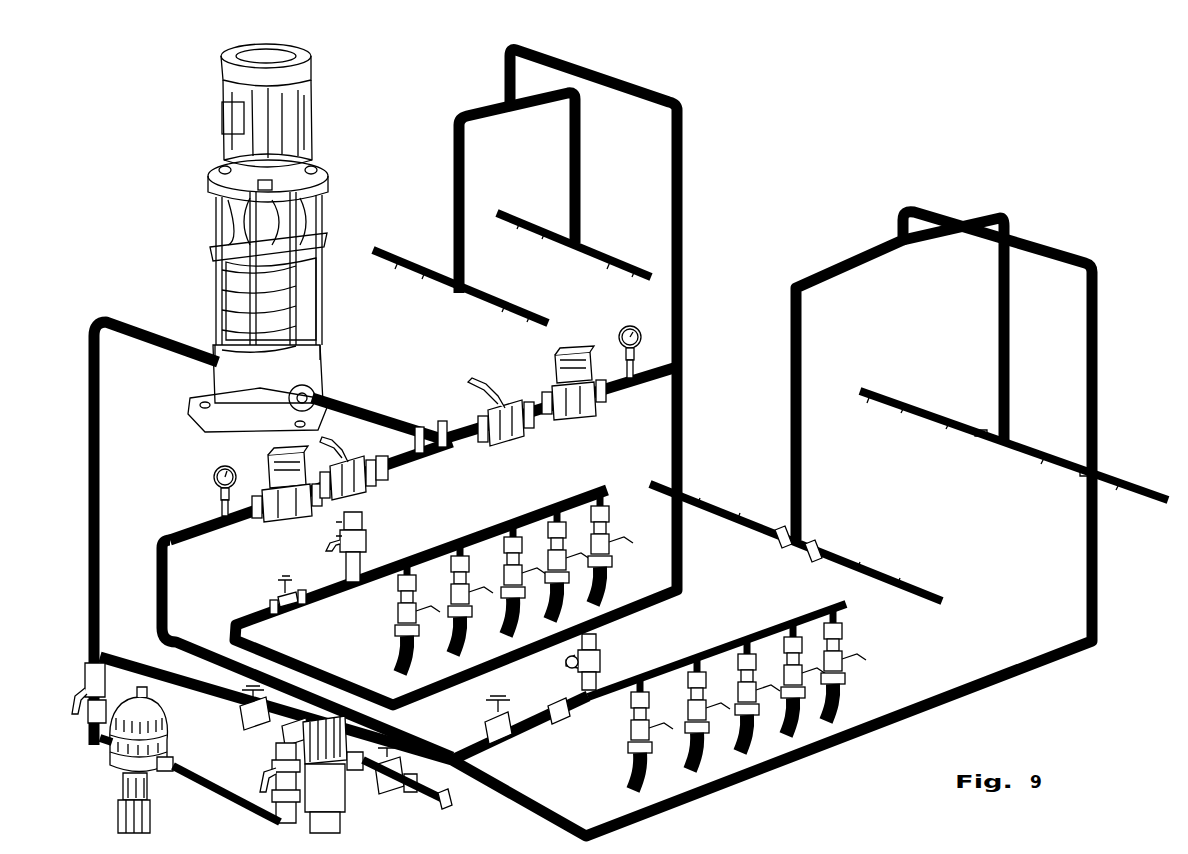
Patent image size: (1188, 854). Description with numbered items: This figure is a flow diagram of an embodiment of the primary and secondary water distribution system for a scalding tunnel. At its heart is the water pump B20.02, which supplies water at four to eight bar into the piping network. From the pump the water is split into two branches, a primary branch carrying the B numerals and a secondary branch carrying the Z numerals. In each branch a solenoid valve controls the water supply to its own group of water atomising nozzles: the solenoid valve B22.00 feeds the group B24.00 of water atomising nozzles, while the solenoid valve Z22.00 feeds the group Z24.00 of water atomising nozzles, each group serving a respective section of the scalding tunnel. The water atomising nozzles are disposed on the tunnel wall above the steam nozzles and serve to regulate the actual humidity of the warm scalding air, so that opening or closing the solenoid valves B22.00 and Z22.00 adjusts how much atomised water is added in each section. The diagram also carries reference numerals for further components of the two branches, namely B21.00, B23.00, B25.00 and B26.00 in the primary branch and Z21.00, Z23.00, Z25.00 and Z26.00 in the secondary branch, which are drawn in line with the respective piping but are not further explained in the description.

The water pump B20.02 is at (214, 288).
The group of water atomising nozzles Z24.00 is at (456, 377).
The pressure gauge Z23.00 is at (622, 333).
The solenoid valve Z22.00 is at (585, 414).
The ball valve Z21.00 is at (507, 440).
The ball valve B21.00 is at (388, 478).
The solenoid valve B22.00 is at (292, 524).
The pressure gauge B23.00 is at (218, 512).
The drain valve Z26.00 is at (368, 528).
The manifold with outlet valves Z25.00 is at (451, 583).
The drain valve B26.00 is at (598, 650).
The manifold with outlet valves B25.00 is at (727, 697).
The group of water atomising nozzles B24.00 is at (796, 542).